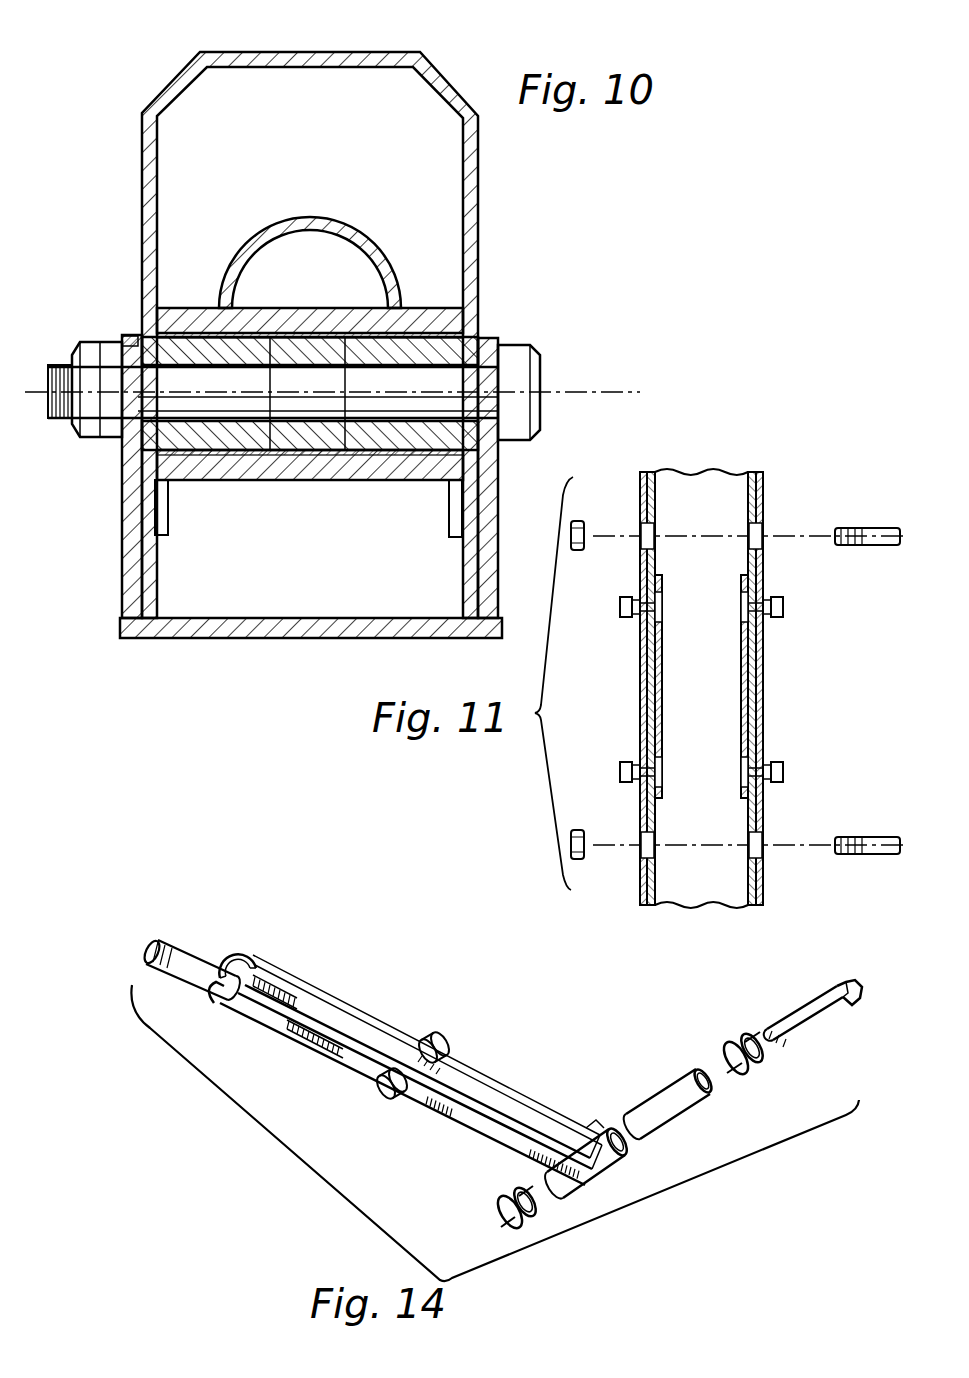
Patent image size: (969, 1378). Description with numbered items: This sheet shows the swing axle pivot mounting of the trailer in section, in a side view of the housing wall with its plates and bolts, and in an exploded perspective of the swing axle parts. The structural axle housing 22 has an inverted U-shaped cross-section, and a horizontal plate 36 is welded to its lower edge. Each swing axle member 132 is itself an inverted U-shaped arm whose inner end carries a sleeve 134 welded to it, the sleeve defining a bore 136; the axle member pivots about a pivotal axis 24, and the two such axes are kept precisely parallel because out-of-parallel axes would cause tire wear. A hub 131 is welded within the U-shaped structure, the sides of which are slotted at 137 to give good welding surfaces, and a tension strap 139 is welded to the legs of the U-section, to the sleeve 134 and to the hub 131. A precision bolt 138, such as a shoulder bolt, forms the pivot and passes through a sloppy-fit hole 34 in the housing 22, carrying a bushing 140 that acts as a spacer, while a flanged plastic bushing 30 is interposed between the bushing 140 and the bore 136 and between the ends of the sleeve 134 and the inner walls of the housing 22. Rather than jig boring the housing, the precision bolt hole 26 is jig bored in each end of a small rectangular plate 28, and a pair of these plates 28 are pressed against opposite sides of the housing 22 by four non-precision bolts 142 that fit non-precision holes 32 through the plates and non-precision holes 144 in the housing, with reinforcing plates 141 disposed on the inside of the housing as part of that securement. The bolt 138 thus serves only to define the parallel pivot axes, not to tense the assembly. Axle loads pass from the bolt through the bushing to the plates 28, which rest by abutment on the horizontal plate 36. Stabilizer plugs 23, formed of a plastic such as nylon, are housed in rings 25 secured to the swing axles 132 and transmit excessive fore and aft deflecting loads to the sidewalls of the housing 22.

In FIG. 10, the structural axle housing 22 is at (385, 52).
In FIG. 11, the structural axle housing 22 is at (658, 476).
In FIG. 14, the stabilizer plug 23 is at (454, 1045).
In FIG. 10, the pivotal axis 24 is at (38, 412).
In FIG. 11, the pivotal axis 24 is at (606, 536).
In FIG. 14, the ring 25 is at (436, 1038).
In FIG. 10, the precision bolt hole 26 is at (138, 372).
In FIG. 11, the precision bolt hole 26 is at (642, 546).
In FIG. 10, the rectangular plate 28 is at (130, 548).
In FIG. 11, the rectangular plate 28 is at (640, 580).
In FIG. 10, the flanged plastic bushing 30 is at (188, 318).
In FIG. 14, the flanged plastic bushing 30 is at (722, 1050).
In FIG. 11, the non-precision hole 32 is at (620, 614).
In FIG. 10, the hole 34 is at (127, 338).
In FIG. 11, the hole 34 is at (750, 522).
In FIG. 10, the horizontal plate 36 is at (270, 638).
In FIG. 11, the horizontal plate 36 is at (718, 656).
In FIG. 14, the hub 131 is at (188, 952).
In FIG. 10, the swing axle member 132 is at (318, 216).
In FIG. 14, the swing axle member 132 is at (518, 1095).
In FIG. 10, the sleeve 134 is at (292, 470).
In FIG. 14, the sleeve 134 is at (612, 1160).
In FIG. 14, the bore 136 is at (612, 1130).
In FIG. 14, the slot 137 is at (252, 958).
In FIG. 10, the precision bolt 138 is at (325, 338).
In FIG. 11, the precision bolt 138 is at (878, 512).
In FIG. 14, the precision bolt 138 is at (826, 1015).
In FIG. 14, the tension strap 139 is at (342, 1057).
In FIG. 10, the bushing 140 is at (246, 470).
In FIG. 14, the bushing 140 is at (680, 1112).
In FIG. 10, the reinforcing plate 141 is at (170, 515).
In FIG. 11, the reinforcing plate 141 is at (742, 690).
In FIG. 11, the bolt 142 is at (665, 612).
In FIG. 11, the non-precision hole 144 is at (752, 612).